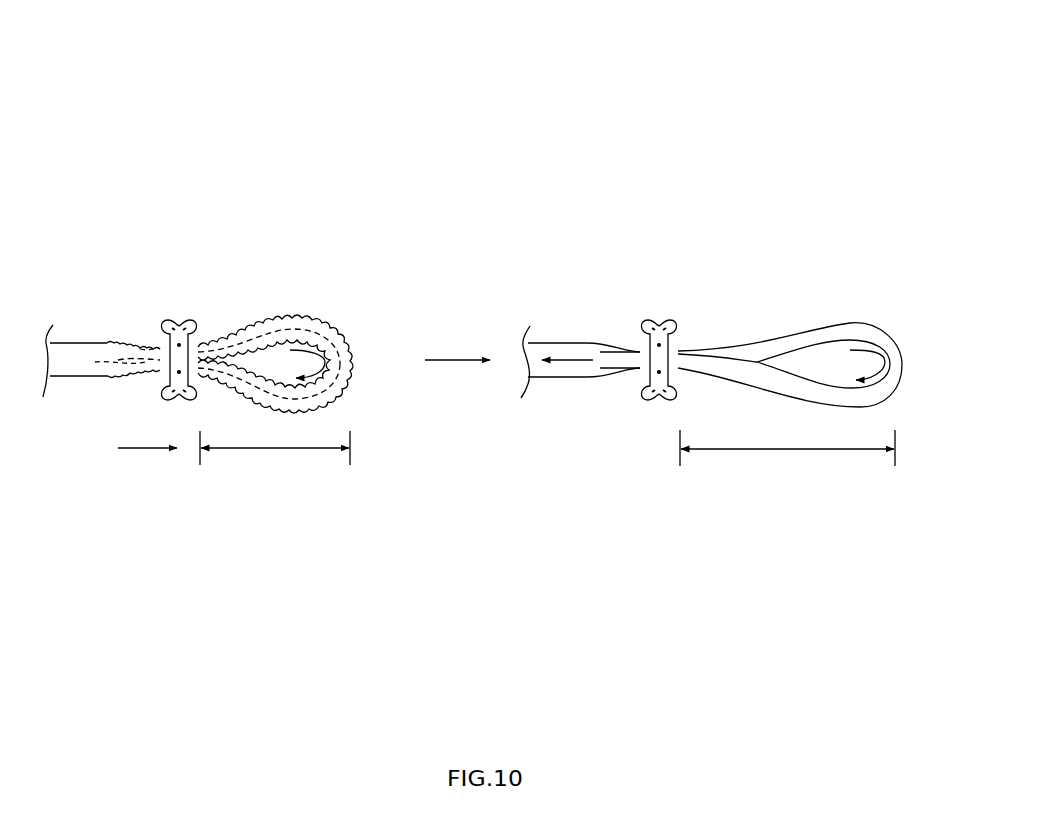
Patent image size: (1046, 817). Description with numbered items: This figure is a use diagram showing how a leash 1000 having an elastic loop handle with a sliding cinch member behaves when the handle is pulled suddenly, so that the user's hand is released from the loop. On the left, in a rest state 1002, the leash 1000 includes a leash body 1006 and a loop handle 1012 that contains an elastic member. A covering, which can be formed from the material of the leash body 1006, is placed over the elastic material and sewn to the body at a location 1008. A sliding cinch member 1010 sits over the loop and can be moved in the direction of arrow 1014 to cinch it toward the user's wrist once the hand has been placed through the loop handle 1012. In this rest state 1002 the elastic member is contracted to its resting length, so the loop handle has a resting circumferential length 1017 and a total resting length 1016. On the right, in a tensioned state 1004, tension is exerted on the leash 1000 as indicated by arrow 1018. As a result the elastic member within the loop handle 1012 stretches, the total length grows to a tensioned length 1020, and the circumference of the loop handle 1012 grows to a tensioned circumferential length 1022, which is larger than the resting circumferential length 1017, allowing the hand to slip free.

The leash 1000 is at (509, 27).
The rest state 1002 is at (340, 168).
The tensioned state 1004 is at (864, 169).
The leash body 1006 is at (73, 328).
The location 1008 is at (113, 328).
The sliding cinch member 1010 is at (181, 320).
The loop handle 1012 is at (328, 320).
The arrow 1014 is at (148, 448).
The total resting length 1016 is at (274, 448).
The resting circumferential length 1017 is at (328, 368).
The arrow 1018 is at (573, 364).
The tensioned length 1020 is at (793, 449).
The tensioned circumferential length 1022 is at (882, 368).